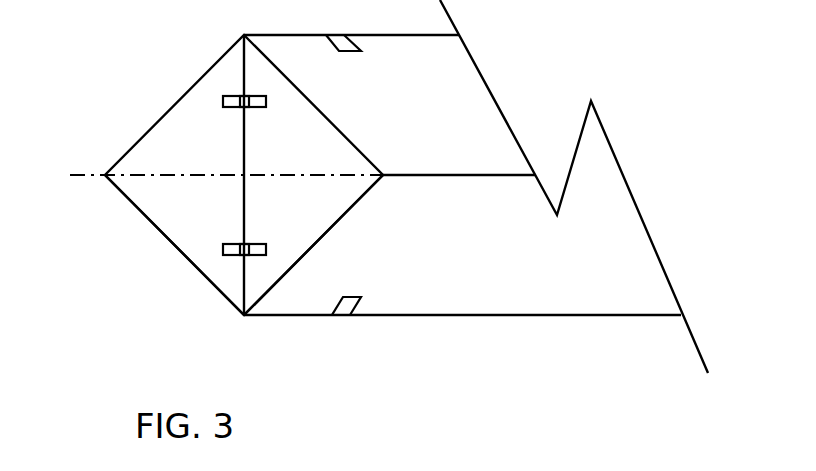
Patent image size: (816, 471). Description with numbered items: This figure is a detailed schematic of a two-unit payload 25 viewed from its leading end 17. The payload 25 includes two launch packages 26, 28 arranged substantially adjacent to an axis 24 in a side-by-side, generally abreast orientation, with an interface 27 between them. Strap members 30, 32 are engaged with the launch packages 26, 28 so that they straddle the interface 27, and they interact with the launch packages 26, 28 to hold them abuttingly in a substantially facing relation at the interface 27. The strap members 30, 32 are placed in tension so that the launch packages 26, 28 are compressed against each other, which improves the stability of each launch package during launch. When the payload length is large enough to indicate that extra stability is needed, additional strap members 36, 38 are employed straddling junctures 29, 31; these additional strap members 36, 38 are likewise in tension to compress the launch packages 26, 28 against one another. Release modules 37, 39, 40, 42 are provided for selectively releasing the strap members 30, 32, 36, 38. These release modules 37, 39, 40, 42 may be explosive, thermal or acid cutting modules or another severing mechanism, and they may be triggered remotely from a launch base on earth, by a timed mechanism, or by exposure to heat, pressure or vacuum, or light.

The leading end 17 is at (191, 252).
The axis 24 is at (76, 173).
The payload 25 is at (264, 337).
The launch package 26 is at (162, 220).
The interface 27 is at (247, 152).
The launch package 28 is at (330, 219).
The juncture 29 is at (376, 36).
The strap member 30 is at (228, 108).
The juncture 31 is at (448, 317).
The strap member 32 is at (230, 244).
The additional strap member 36 is at (356, 53).
The release module 37 is at (335, 35).
The additional strap member 38 is at (361, 297).
The release module 39 is at (339, 317).
The release module 40 is at (242, 95).
The release module 42 is at (248, 257).